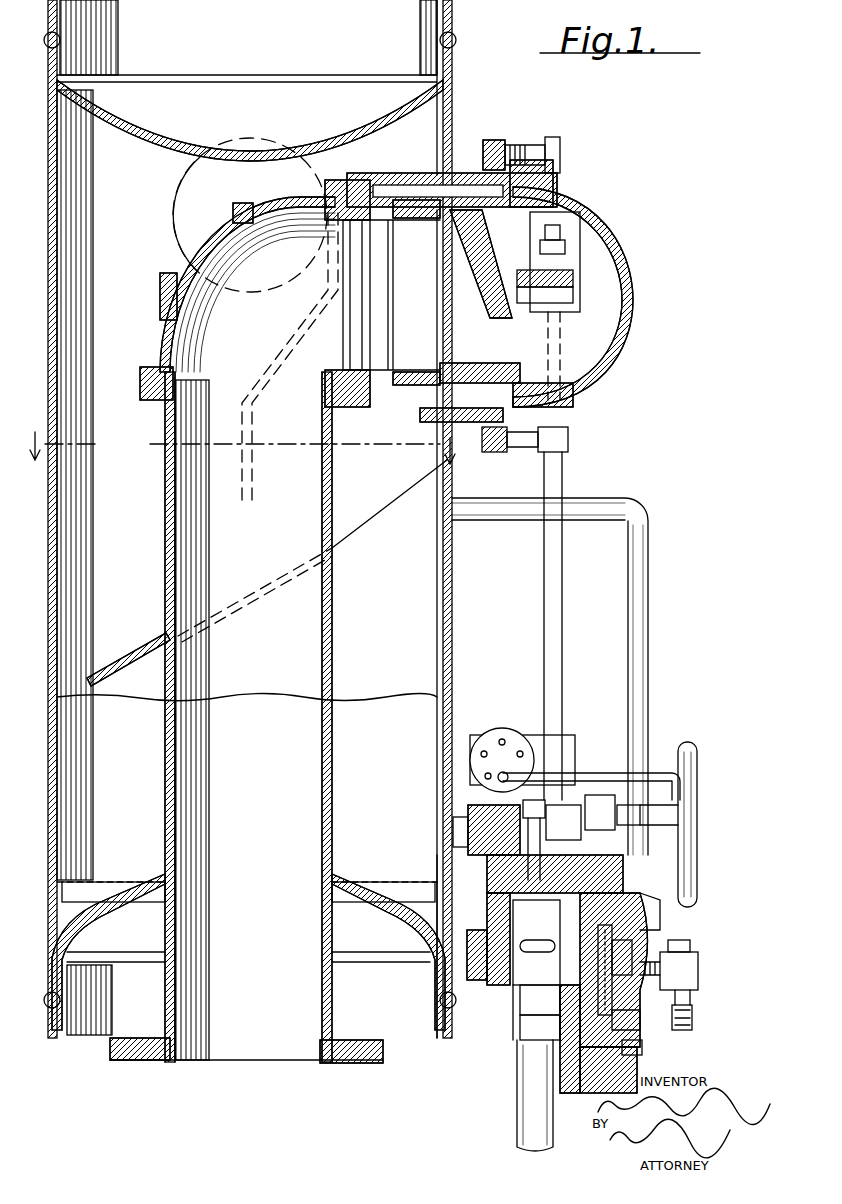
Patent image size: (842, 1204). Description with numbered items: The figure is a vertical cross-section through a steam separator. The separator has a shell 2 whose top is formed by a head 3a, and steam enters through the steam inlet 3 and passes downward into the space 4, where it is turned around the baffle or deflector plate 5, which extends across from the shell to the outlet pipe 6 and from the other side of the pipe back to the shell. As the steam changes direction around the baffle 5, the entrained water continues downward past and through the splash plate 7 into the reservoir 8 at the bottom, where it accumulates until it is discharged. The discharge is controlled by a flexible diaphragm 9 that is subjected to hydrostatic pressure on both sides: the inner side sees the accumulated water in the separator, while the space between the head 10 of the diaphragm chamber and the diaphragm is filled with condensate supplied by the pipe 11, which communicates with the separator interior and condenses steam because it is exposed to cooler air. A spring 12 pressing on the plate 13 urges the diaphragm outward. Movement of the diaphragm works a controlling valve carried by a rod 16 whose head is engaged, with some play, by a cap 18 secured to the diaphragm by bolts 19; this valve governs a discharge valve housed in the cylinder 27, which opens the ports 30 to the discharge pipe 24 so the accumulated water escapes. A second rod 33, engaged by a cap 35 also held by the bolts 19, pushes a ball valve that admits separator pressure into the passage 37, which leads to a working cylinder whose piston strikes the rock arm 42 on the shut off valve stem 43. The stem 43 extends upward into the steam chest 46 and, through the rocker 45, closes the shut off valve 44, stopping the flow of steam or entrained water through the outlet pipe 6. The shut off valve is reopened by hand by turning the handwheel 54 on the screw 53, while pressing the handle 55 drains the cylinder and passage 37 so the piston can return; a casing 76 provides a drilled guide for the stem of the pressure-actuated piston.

The shell 2 is at (45, 772).
The steam inlet 3 is at (190, 205).
The head 3a is at (172, 138).
The space 4 is at (120, 326).
The baffle or deflector plate 5 is at (254, 468).
The outlet pipe 6 is at (258, 1015).
The splash plate 7 is at (140, 650).
The reservoir 8 is at (115, 840).
The flexible diaphragm 9 is at (640, 1046).
The head of diaphragm chamber 10 is at (642, 1030).
The pipe 11 is at (645, 620).
The spring 12 is at (505, 1072).
The plate 13 is at (548, 1040).
The rod 16 is at (520, 1010).
The cap 18 is at (618, 942).
The bolts 19 is at (652, 912).
The discharge pipe 24 is at (525, 1100).
The cylinder 27 is at (465, 890).
The ports 30 is at (495, 992).
The rod 33 is at (700, 966).
The cap 35 is at (650, 952).
The passage or pipe 37 is at (655, 778).
The rock arm 42 is at (472, 740).
The shut off valve stem 43 is at (556, 648).
The shut off valve 44 is at (445, 330).
The rocker 45 is at (556, 280).
The steam chest 46 is at (592, 330).
The screw 53 is at (530, 805).
The handwheel 54 is at (690, 806).
The handle 55 is at (692, 1025).
The casing 76 is at (692, 976).